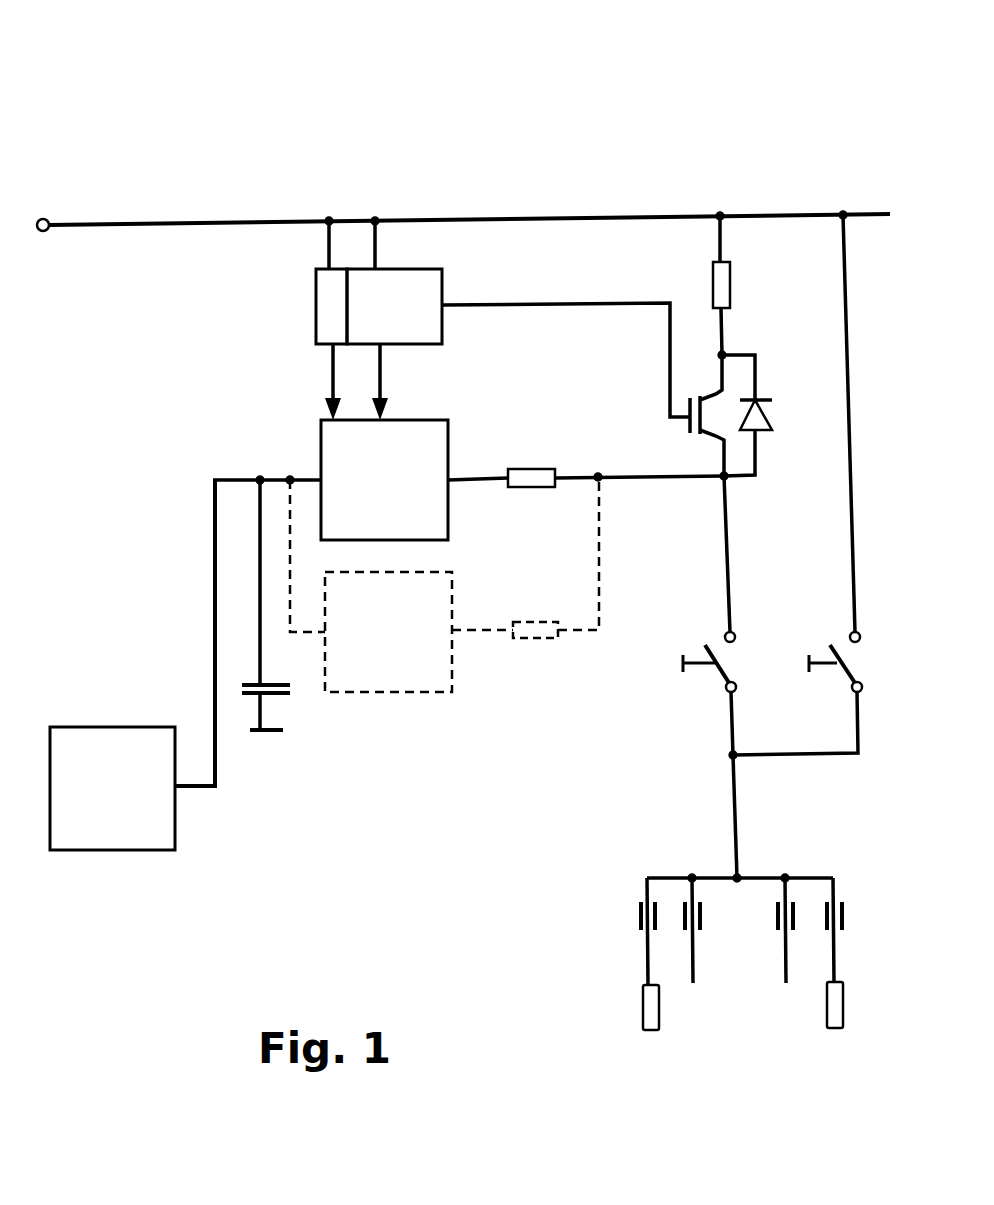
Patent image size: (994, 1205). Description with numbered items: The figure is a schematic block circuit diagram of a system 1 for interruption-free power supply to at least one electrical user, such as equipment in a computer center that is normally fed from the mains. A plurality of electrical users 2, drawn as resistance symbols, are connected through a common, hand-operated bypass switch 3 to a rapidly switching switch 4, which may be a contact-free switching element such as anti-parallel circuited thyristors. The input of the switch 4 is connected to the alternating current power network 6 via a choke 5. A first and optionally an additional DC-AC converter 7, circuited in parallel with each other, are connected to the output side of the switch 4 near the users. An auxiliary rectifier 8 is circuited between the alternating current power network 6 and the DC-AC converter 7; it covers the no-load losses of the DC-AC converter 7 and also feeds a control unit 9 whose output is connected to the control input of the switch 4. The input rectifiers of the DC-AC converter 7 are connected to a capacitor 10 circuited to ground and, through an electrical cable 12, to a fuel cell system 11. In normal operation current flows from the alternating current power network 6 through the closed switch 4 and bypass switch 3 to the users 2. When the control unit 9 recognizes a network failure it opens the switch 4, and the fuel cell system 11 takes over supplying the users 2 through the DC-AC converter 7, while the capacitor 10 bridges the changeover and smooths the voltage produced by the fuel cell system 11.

The system 1 is at (214, 160).
The electrical users 2 is at (827, 1001).
The bypass switch 3 is at (727, 668).
The switch 4 is at (766, 336).
The choke 5 is at (713, 280).
The alternating current power network 6 is at (46, 232).
The DC-AC converter 7 is at (436, 525).
The auxiliary rectifier 8 is at (323, 300).
The control unit 9 is at (428, 289).
The capacitor 10 is at (275, 697).
The fuel cell system 11 is at (120, 740).
The electrical cable 12 is at (215, 518).